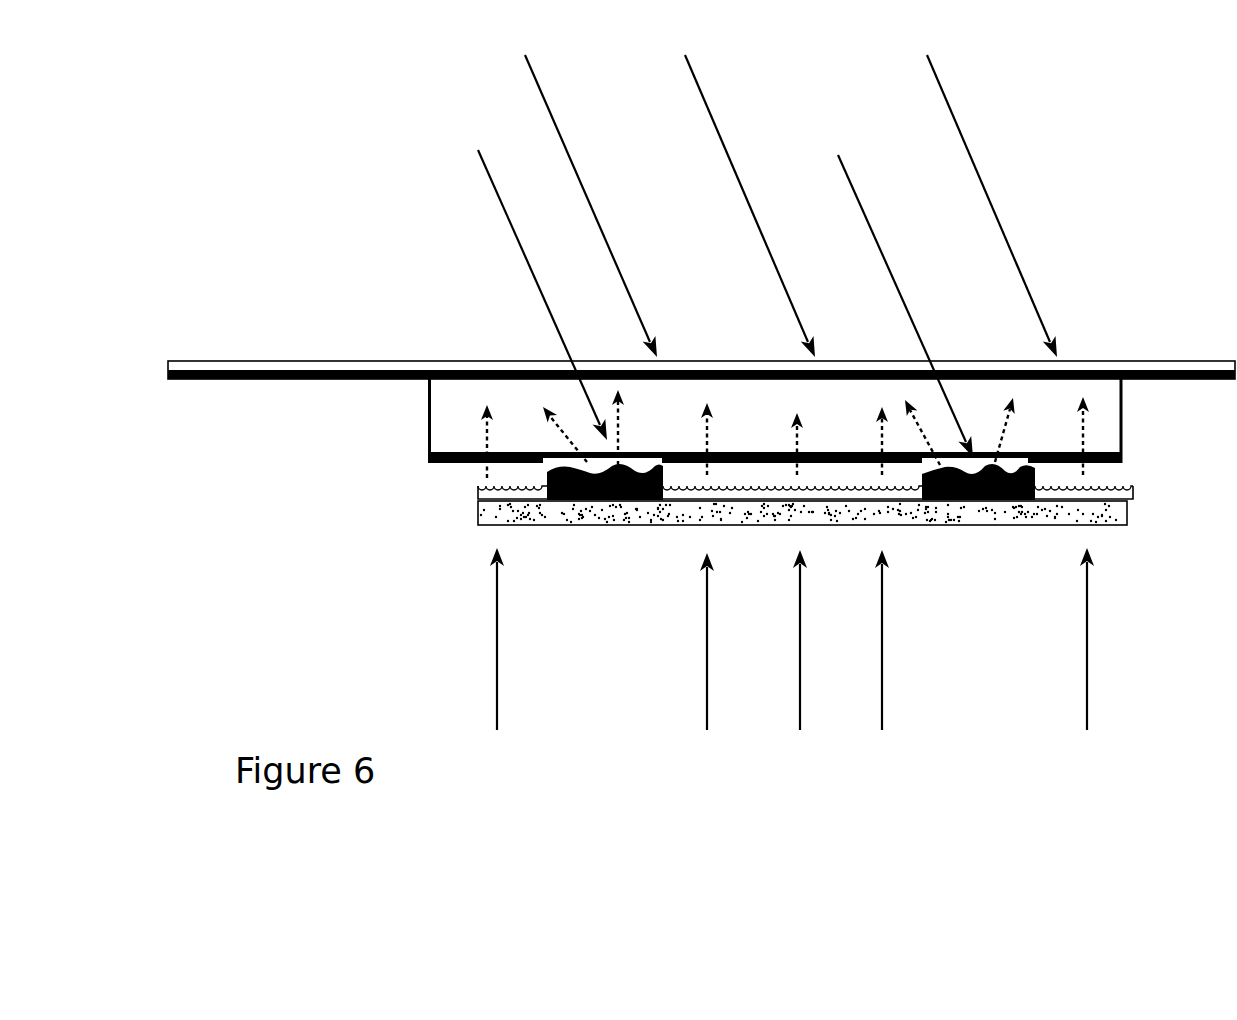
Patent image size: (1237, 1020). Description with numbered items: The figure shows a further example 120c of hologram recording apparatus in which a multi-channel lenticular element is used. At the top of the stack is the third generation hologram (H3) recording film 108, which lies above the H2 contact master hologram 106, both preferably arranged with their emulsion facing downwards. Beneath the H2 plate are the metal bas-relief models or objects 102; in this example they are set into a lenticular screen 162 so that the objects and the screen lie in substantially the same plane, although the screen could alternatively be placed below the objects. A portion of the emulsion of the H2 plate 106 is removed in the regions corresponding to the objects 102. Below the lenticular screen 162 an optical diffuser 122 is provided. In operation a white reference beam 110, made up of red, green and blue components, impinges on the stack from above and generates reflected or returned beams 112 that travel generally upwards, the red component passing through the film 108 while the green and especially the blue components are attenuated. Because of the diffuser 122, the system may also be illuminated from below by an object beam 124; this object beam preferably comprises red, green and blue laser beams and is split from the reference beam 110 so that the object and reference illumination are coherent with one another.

The metal bas-relief models or objects 102 is at (587, 500).
The H2 contact master hologram 106 is at (740, 421).
The H3 recording film 108 is at (691, 347).
The reference beam 110 is at (446, 100).
The reflected or returned beams 112 is at (785, 434).
The hologram recording apparatus 120c is at (238, 622).
The optical diffuser 122 is at (470, 532).
The object beam 124 is at (794, 788).
The lenticular screen 162 is at (462, 489).